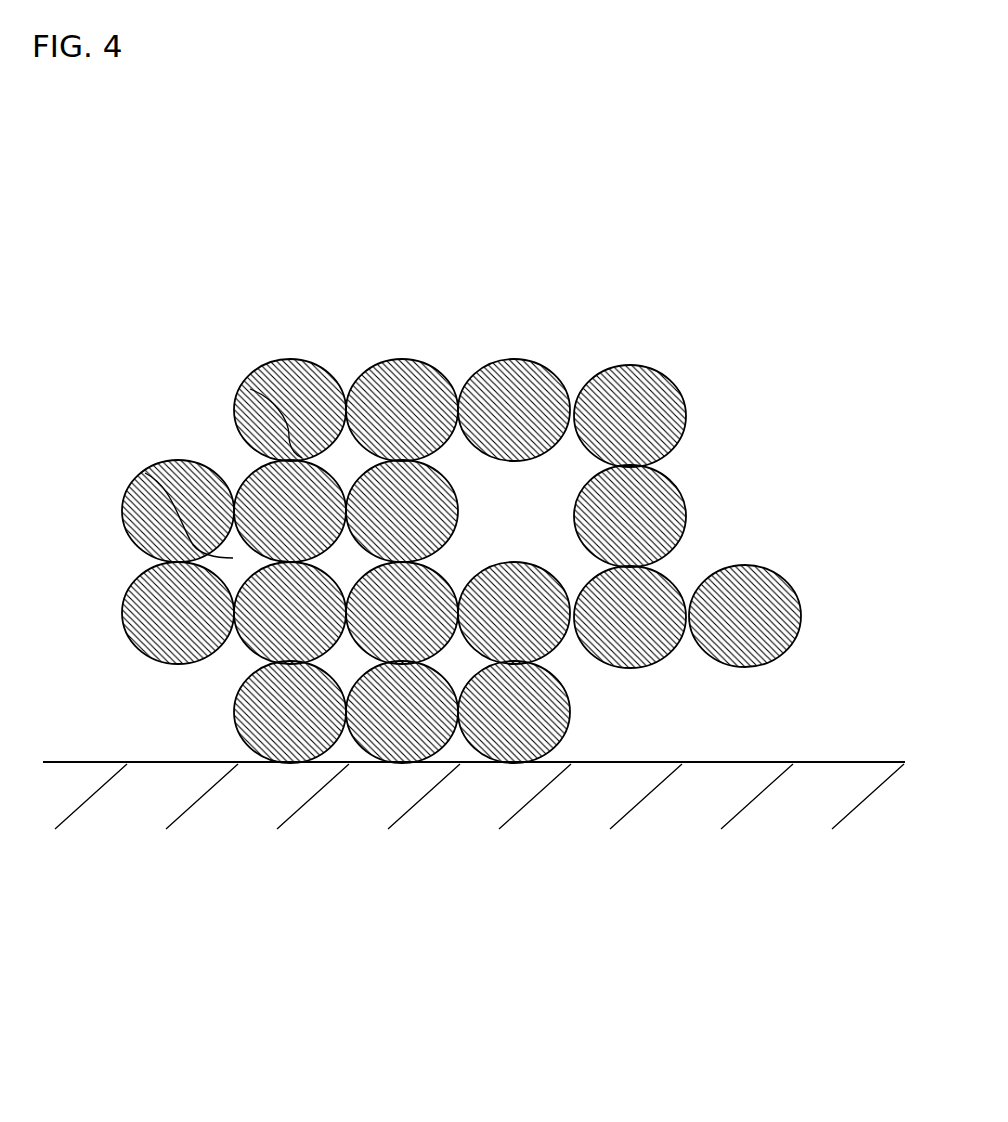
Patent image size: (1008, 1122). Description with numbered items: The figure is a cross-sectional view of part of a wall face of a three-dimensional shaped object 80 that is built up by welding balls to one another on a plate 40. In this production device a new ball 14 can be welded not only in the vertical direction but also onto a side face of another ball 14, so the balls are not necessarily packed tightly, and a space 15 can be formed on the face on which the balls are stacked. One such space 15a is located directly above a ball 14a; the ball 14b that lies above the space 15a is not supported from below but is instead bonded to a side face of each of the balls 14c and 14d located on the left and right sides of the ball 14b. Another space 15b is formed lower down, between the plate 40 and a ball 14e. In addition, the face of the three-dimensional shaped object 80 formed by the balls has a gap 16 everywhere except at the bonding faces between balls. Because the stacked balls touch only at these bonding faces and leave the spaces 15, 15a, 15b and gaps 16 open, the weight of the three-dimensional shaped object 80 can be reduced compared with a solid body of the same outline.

The three-dimensional shaped object 80 is at (465, 341).
The ball 14 is at (303, 387).
The ball 14a is at (520, 600).
The ball 14b is at (517, 392).
The ball 14c is at (402, 387).
The ball 14d is at (648, 402).
The ball 14e is at (647, 612).
The space 15 is at (173, 717).
The space 15a is at (517, 512).
The space 15b is at (630, 717).
The gap 16 is at (250, 389).
The plate 40 is at (477, 797).